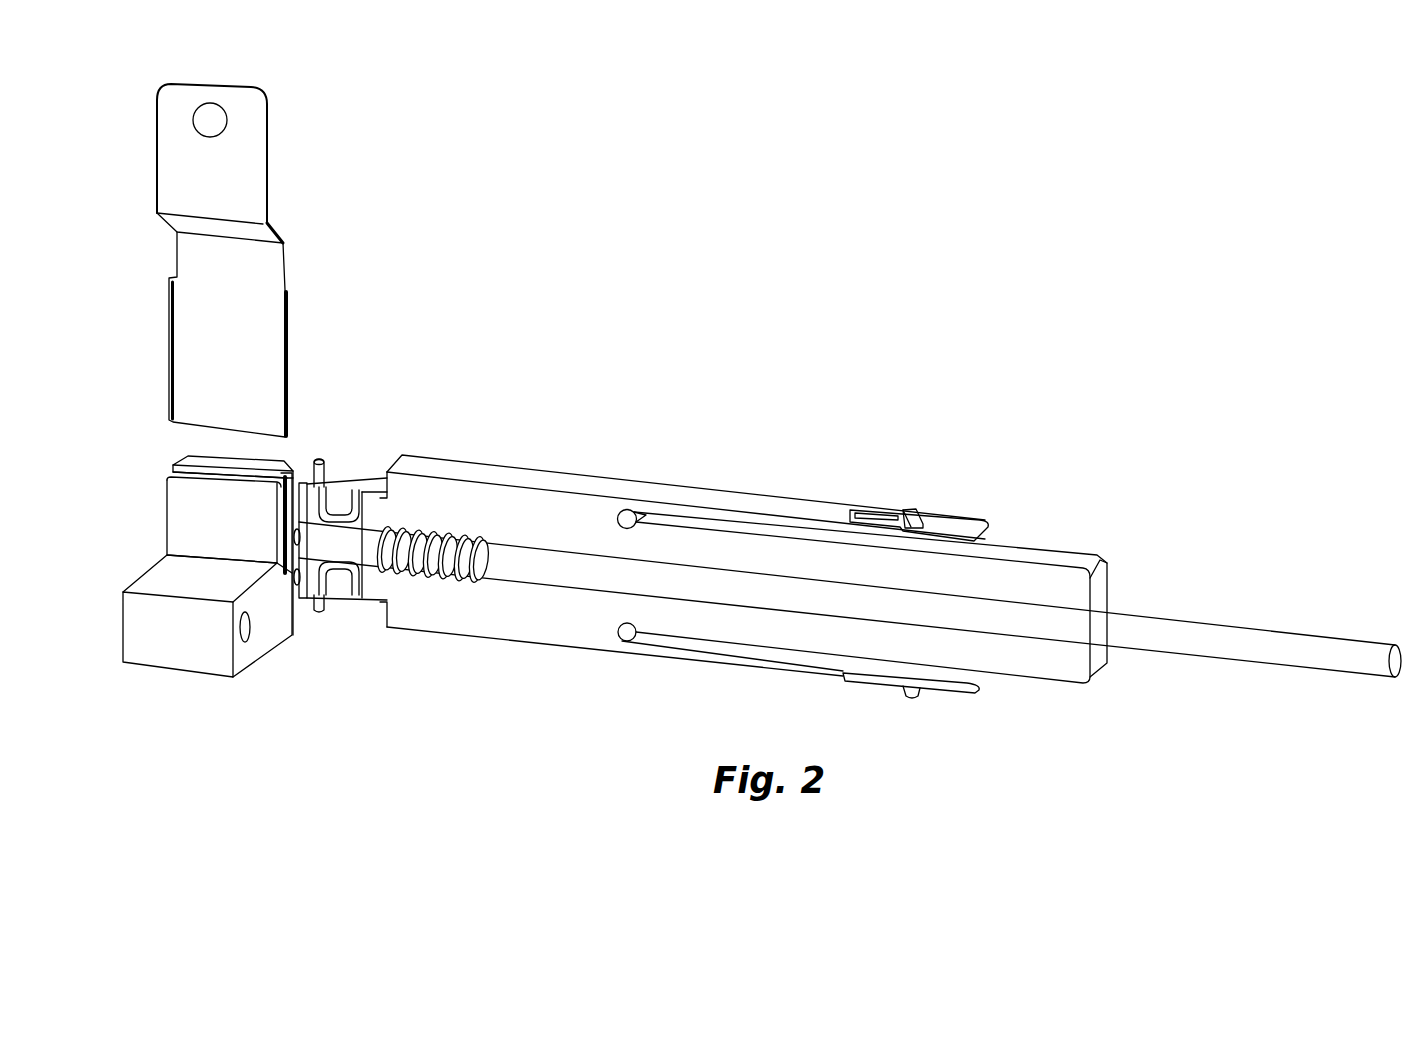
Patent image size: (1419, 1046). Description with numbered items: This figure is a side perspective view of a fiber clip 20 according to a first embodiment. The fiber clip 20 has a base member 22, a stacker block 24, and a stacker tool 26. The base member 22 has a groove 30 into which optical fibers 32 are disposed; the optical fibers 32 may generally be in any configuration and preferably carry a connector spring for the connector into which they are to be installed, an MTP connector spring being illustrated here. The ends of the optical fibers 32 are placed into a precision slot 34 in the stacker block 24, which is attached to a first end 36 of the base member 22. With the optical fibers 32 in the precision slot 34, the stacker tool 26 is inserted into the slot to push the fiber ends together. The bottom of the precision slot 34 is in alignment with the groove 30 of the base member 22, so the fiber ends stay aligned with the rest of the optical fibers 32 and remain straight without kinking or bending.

The fiber clip 20 is at (1094, 352).
The base member 22 is at (1080, 684).
The stacker block 24 is at (249, 668).
The stacker tool 26 is at (268, 160).
The groove 30 is at (1043, 602).
The optical fibers 32 is at (1246, 672).
The precision slot 34 is at (298, 480).
The first end 36 is at (333, 643).